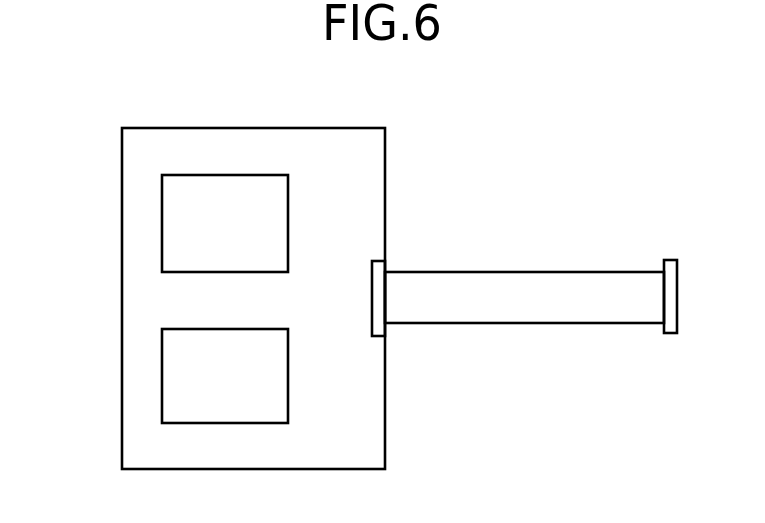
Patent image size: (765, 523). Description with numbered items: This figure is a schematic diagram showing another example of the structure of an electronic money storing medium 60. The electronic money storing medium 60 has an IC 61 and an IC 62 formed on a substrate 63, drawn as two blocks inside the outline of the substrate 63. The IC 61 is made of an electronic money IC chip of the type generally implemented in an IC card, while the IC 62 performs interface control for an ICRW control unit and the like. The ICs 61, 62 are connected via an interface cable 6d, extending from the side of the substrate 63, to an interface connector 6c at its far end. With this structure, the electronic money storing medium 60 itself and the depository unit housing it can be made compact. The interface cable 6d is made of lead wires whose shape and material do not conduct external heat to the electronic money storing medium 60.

The electronic money storing medium 60 is at (386, 195).
The IC 61 is at (172, 217).
The IC 62 is at (178, 382).
The substrate 63 is at (172, 298).
The interface connector 6c is at (670, 260).
The interface cable 6d is at (530, 312).